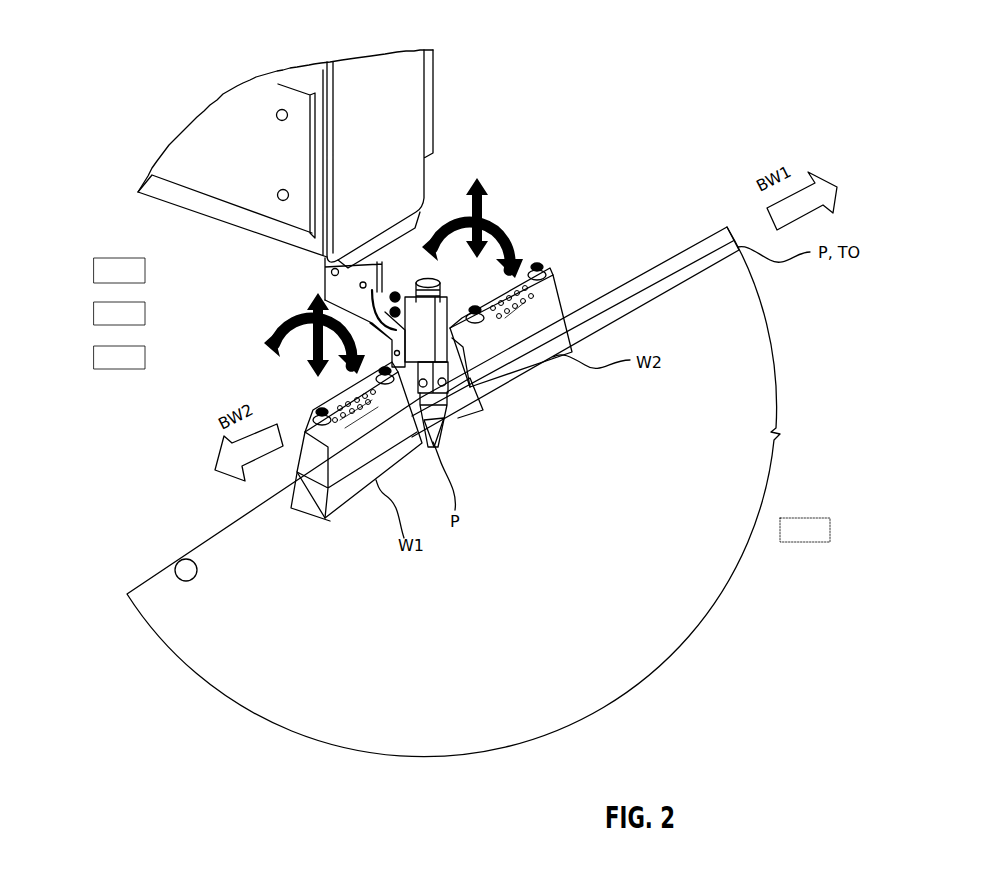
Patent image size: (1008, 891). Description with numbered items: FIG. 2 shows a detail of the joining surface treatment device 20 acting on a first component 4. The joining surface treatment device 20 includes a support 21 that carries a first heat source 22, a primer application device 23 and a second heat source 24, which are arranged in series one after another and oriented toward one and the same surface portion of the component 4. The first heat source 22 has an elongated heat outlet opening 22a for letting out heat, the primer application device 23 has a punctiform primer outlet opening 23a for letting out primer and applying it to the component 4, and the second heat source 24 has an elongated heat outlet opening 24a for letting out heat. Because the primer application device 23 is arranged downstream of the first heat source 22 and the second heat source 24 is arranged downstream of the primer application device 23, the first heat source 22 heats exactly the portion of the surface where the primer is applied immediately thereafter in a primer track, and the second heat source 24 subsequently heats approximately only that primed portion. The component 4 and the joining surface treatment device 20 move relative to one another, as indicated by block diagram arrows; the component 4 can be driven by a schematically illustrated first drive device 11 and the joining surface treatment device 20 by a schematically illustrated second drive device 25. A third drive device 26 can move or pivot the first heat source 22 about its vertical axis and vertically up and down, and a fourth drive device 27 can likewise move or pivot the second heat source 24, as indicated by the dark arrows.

The component 4 is at (762, 373).
The first drive device 11 is at (812, 531).
The joining surface treatment device 20 is at (620, 95).
The support 21 is at (413, 187).
The first heat source 22 is at (322, 417).
The heat outlet opening 22a is at (302, 496).
The primer application device 23 is at (418, 281).
The primer outlet opening 23a is at (446, 418).
The second heat source 24 is at (538, 269).
The heat outlet opening 24a is at (460, 400).
The second drive device 25 is at (110, 270).
The third drive device 26 is at (110, 313).
The fourth drive device 27 is at (110, 357).